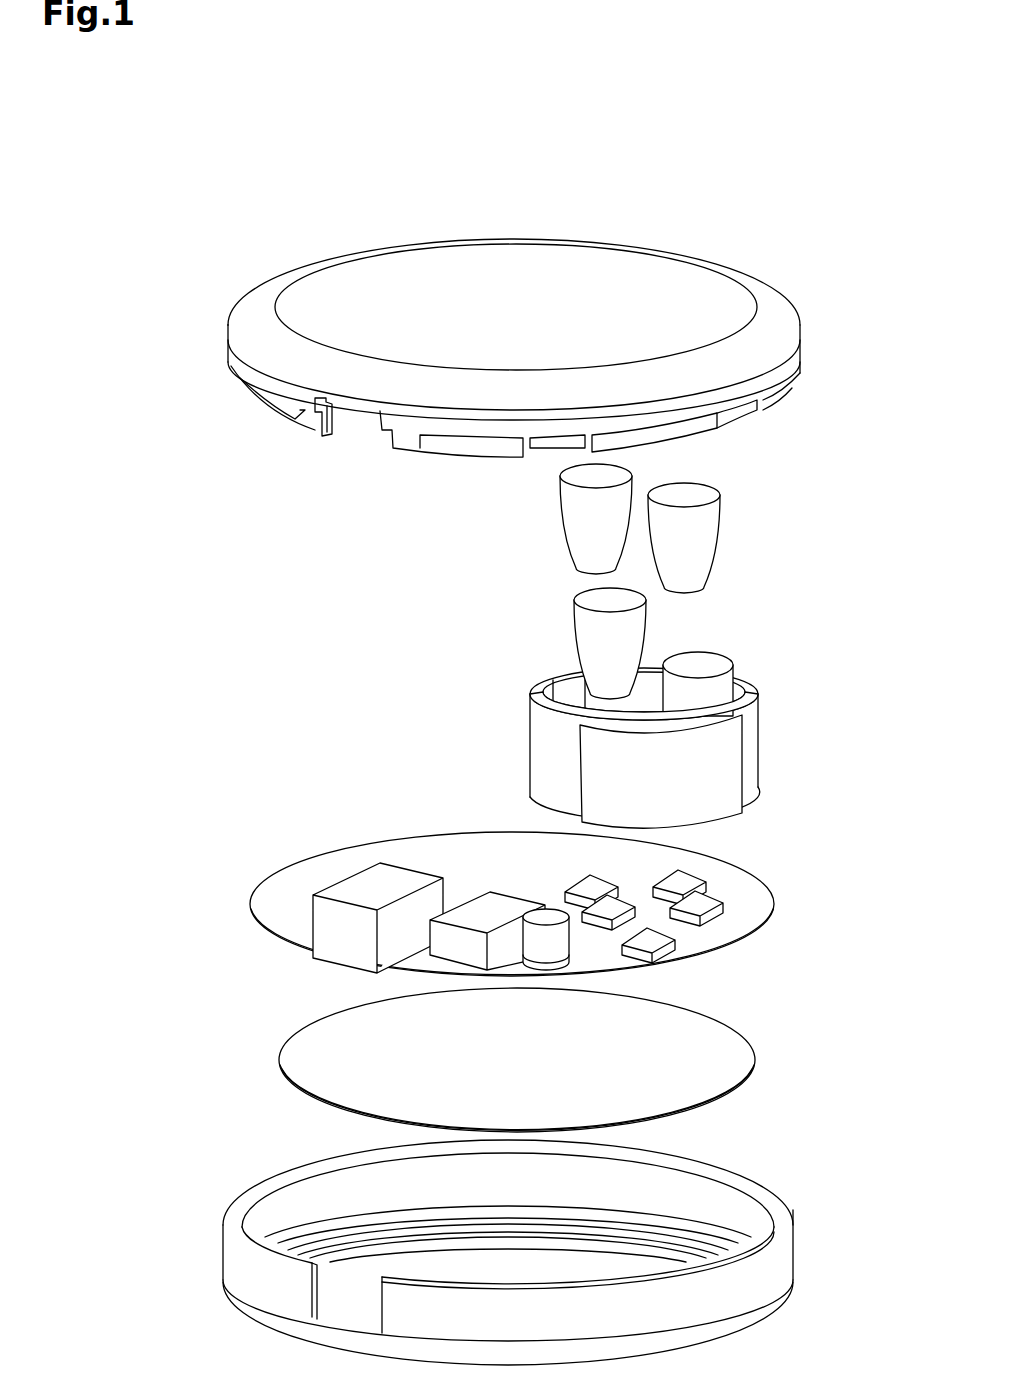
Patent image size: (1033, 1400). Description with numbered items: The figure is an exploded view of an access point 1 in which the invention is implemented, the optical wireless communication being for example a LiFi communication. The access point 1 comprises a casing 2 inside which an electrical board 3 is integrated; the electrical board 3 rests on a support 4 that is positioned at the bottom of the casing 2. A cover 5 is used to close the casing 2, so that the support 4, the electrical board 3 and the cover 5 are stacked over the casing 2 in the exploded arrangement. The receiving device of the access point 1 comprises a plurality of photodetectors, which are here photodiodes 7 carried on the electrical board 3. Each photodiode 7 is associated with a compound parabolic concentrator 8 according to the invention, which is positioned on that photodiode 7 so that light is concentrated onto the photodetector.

The access point 1 is at (294, 539).
The casing 2 is at (780, 1260).
The electrical board 3 is at (435, 852).
The support 4 is at (710, 1045).
The cover 5 is at (657, 275).
The photodiodes 7 is at (682, 878).
The compound parabolic concentrator 8 is at (632, 630).